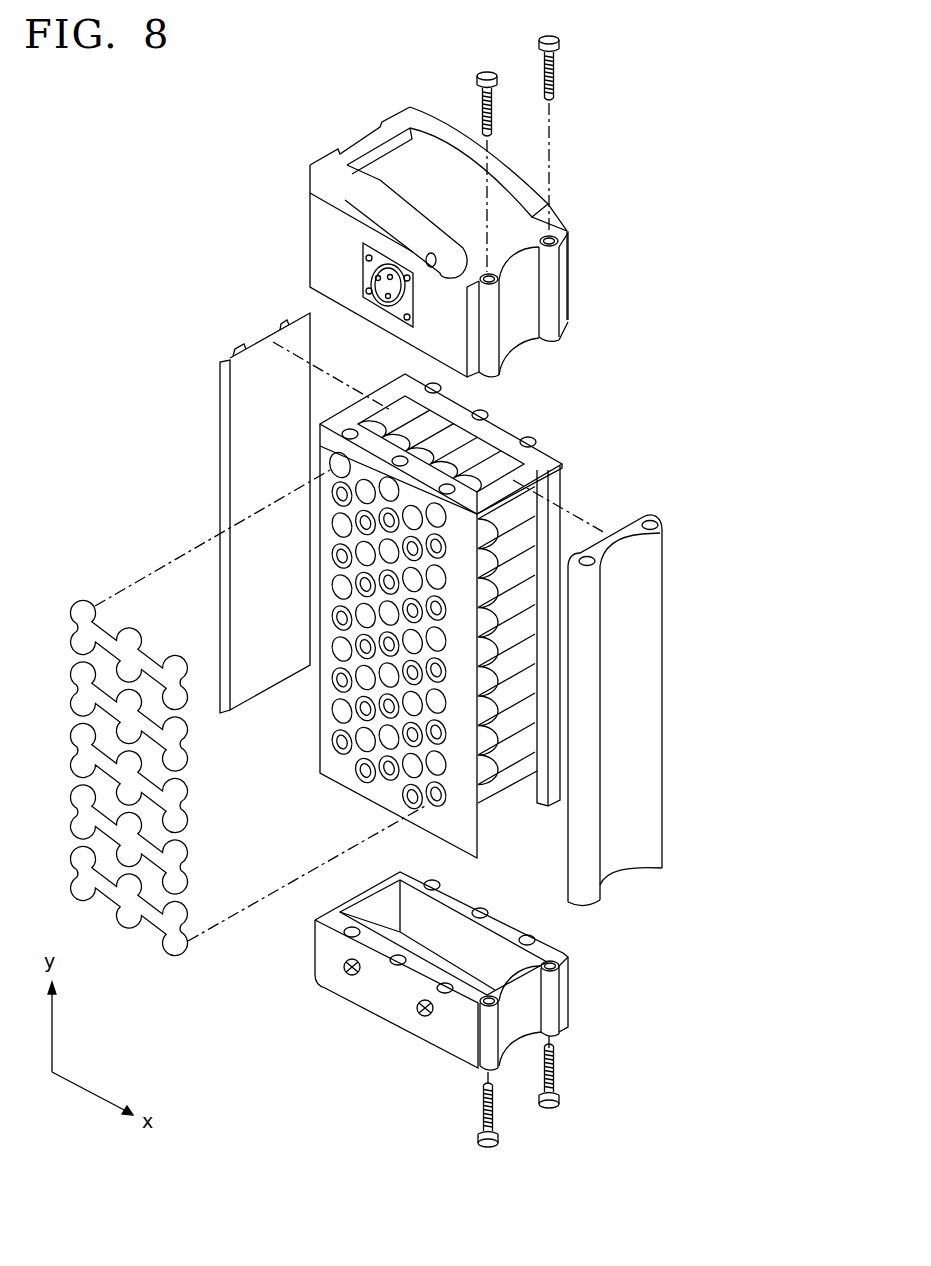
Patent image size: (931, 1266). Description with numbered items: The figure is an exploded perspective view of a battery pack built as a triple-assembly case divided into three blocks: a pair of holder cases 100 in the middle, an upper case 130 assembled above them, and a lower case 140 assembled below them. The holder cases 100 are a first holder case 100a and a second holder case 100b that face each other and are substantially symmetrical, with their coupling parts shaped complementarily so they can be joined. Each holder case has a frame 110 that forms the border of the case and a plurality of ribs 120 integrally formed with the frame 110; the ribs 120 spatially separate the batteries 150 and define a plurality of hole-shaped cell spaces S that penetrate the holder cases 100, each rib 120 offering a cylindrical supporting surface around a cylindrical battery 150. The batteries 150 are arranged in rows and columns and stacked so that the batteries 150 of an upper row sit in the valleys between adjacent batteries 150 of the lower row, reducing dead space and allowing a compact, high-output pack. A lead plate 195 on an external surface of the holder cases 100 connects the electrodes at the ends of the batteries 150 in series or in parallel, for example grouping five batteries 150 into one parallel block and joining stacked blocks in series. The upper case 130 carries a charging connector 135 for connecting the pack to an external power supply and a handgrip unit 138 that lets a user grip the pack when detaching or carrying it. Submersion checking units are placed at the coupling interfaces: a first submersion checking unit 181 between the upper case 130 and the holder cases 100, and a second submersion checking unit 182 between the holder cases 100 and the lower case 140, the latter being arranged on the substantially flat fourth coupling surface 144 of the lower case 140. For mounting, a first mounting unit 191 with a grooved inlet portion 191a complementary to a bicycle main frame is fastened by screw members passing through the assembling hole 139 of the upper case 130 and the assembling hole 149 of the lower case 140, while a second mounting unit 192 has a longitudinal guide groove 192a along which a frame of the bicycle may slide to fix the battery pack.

The holder cases 100 is at (316, 707).
The first holder case 100a is at (344, 423).
The second holder case 100b is at (505, 420).
The frame 110 is at (320, 440).
The ribs 120 is at (520, 763).
The upper case 130 is at (320, 226).
The charging connector 135 is at (360, 262).
The handgrip unit 138 is at (403, 118).
The assembling hole 139 is at (560, 240).
The lower case 140 is at (425, 1035).
The fourth coupling surface 144 is at (412, 972).
The assembling hole 149 is at (562, 963).
The batteries 150 is at (342, 744).
The first submersion checking unit 181 is at (530, 440).
The second submersion checking unit 182 is at (527, 938).
The first mounting unit 191 is at (647, 512).
The inlet portion 191a is at (631, 582).
The second mounting unit 192 is at (230, 355).
The guide groove 192a is at (263, 343).
The lead plate 195 is at (83, 703).
The cell spaces S is at (331, 463).